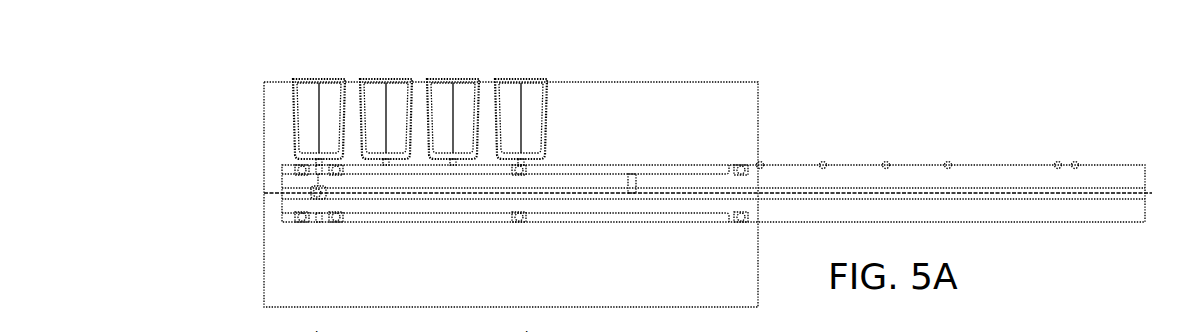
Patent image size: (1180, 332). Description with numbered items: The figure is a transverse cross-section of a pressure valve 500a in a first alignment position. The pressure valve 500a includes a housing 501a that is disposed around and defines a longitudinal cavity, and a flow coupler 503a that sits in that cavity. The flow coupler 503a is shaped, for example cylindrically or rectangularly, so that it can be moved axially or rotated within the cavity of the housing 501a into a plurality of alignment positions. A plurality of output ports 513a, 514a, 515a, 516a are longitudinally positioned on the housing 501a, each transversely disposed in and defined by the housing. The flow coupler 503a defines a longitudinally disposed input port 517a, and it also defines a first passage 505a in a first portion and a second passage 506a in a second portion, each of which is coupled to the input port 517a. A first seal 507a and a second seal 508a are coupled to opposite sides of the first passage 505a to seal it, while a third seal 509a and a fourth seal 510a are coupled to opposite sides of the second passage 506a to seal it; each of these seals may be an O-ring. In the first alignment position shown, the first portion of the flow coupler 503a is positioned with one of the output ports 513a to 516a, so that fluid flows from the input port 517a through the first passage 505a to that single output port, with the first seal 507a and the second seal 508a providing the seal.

The pressure valve 500a is at (170, 76).
The housing 501a is at (645, 109).
The flow coupler 503a is at (981, 178).
The first passage 505a is at (318, 180).
The second passage 506a is at (633, 191).
The first seal 507a is at (329, 224).
The second seal 508a is at (291, 163).
The third seal 509a is at (515, 224).
The fourth seal 510a is at (749, 164).
The output port 513a is at (312, 78).
The output port 514a is at (382, 74).
The output port 515a is at (457, 74).
The output port 516a is at (533, 73).
The input port 517a is at (828, 194).